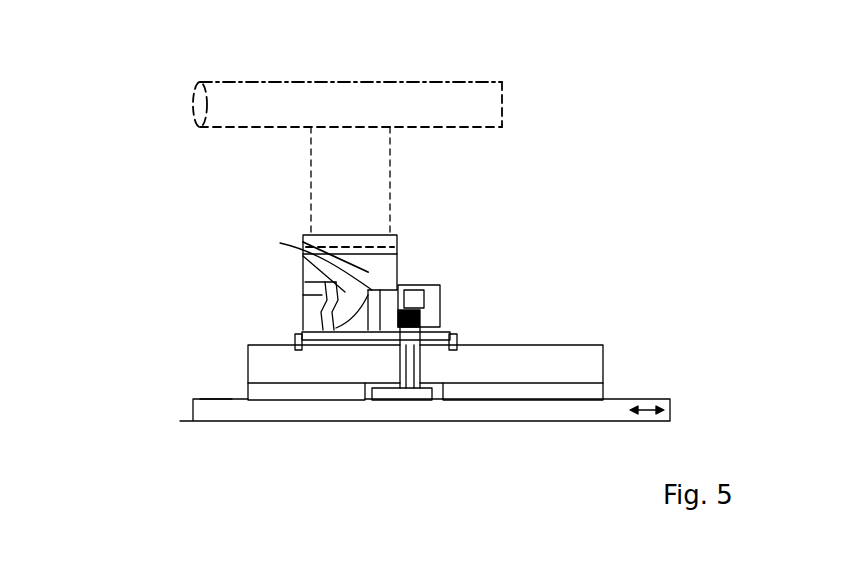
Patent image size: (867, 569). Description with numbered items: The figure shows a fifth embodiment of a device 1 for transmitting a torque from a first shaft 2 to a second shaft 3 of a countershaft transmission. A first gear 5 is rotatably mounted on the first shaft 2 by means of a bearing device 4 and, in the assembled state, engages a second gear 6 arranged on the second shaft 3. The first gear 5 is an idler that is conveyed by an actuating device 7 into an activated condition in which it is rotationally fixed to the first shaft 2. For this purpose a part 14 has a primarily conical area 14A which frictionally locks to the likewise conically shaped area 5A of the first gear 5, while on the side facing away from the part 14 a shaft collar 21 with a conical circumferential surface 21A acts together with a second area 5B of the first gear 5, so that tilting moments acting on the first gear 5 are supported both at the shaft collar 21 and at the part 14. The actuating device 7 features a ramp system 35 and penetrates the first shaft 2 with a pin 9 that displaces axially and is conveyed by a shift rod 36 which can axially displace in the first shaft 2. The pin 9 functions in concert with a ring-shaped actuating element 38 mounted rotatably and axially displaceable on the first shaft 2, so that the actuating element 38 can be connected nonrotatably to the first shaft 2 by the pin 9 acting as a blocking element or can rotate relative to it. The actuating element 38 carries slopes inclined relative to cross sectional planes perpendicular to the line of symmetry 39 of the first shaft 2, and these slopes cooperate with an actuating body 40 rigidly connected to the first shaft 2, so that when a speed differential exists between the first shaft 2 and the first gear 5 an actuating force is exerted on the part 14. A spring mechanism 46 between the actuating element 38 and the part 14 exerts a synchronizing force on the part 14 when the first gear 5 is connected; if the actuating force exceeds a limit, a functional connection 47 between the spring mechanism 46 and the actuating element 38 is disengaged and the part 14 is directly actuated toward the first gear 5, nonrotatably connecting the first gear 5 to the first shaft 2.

The device 1 is at (141, 104).
The first shaft 2 is at (552, 375).
The second shaft 3 is at (477, 110).
The bearing device 4 is at (332, 338).
The first gear 5 is at (280, 243).
The area 5A is at (300, 322).
The second area 5B is at (305, 283).
The second gear 6 is at (325, 193).
The actuating device 7 is at (431, 403).
The pin 9 is at (414, 386).
The part 14 is at (432, 296).
The area 14A is at (303, 242).
The shaft collar 21 is at (300, 312).
The circumferential surface 21A is at (310, 272).
The ramp system 35 is at (396, 384).
The shift rod 36 is at (232, 410).
The actuating element 38 is at (430, 312).
The line of symmetry 39 is at (585, 423).
The actuating body 40 is at (387, 342).
The spring mechanism 46 is at (410, 278).
The functional connection 47 is at (441, 284).